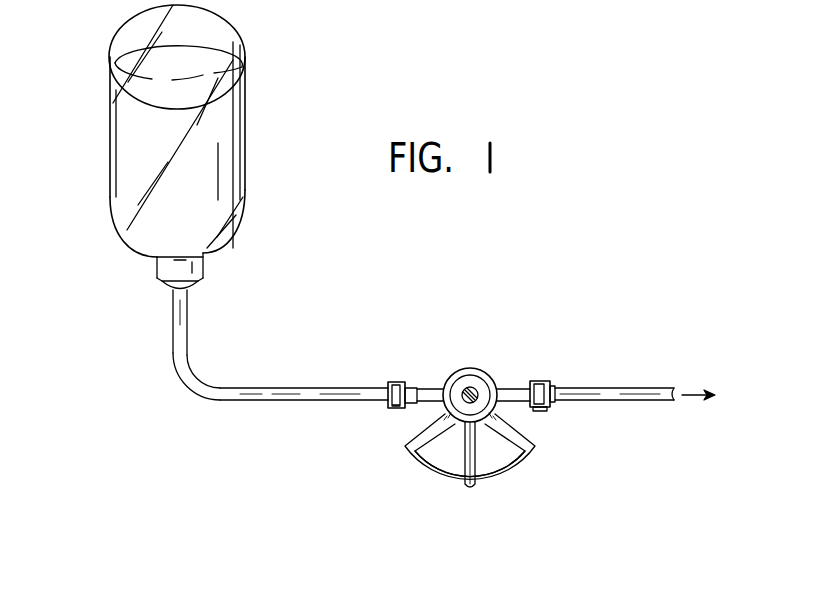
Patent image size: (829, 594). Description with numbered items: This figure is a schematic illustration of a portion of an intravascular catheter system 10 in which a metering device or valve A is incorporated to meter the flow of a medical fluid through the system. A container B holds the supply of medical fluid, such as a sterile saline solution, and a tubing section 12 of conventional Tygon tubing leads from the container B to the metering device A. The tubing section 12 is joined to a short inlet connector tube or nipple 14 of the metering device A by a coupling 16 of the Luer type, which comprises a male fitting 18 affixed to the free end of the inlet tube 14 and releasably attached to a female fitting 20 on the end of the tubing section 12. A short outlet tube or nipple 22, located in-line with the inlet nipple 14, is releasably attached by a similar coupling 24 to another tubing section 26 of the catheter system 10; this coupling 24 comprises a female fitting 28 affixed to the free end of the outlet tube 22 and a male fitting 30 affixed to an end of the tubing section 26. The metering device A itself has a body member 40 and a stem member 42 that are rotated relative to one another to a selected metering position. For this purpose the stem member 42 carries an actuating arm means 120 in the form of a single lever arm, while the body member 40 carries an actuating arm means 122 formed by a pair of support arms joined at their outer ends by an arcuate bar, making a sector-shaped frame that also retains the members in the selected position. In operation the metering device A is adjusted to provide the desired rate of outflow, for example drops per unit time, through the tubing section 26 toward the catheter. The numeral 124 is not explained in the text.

The intravascular catheter system 10 is at (358, 358).
The tubing section 12 is at (268, 403).
The inlet connector tube 14 is at (429, 388).
The coupling 16 is at (400, 372).
The male fitting 18 is at (411, 386).
The female fitting 20 is at (392, 409).
The outlet tube 22 is at (510, 386).
The coupling 24 is at (545, 376).
The tubing section 26 is at (622, 401).
The female fitting 28 is at (546, 410).
The male fitting 30 is at (553, 383).
The body member 40 is at (481, 370).
The stem member 42 is at (467, 366).
The actuating arm means 120 is at (484, 452).
The actuating arm means 122 is at (539, 454).
The pointer 124 is at (460, 483).
The metering device A is at (423, 478).
The container B is at (103, 140).